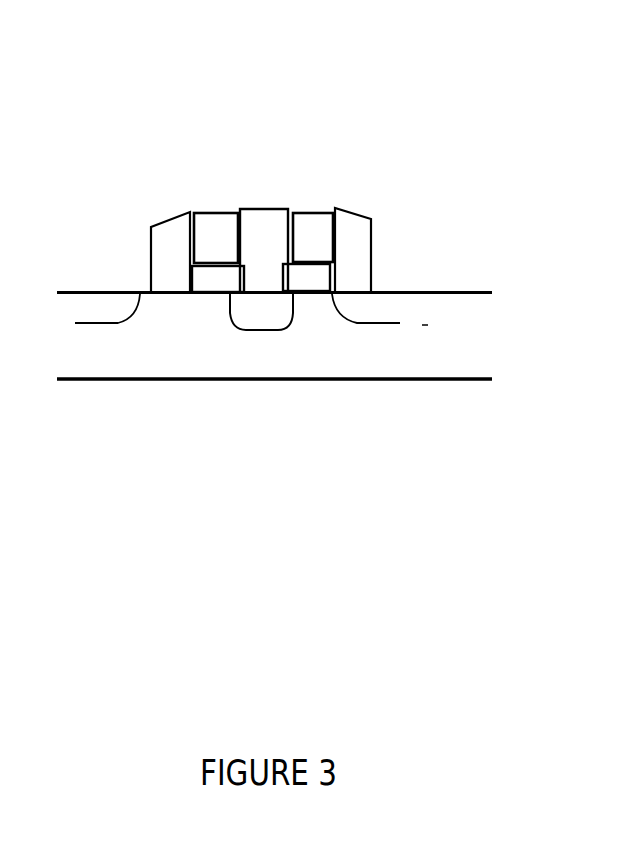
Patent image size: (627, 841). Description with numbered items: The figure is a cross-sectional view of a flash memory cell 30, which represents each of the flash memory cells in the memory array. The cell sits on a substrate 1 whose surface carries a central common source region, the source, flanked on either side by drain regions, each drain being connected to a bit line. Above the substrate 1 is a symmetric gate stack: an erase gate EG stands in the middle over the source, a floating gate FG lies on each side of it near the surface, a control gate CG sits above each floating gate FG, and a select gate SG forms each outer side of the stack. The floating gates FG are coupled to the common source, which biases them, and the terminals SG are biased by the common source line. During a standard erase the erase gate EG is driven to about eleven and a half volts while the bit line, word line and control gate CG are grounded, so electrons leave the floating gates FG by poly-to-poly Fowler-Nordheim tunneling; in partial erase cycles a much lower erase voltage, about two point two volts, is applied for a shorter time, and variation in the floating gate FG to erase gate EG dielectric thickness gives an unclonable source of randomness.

The flash memory cell 30 is at (317, 208).
The semiconductor substrate 1 is at (463, 272).
The source terminals SG is at (261, 250).
The control gate CG is at (263, 238).
The erase gate EG is at (264, 250).
The floating gates FG is at (261, 278).
The common source is at (261, 311).
The drain region (bit line) drain is at (250, 320).